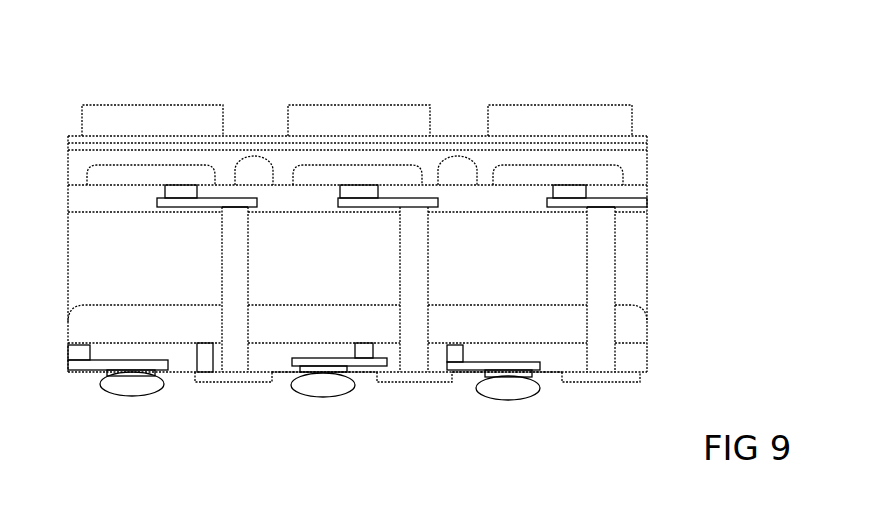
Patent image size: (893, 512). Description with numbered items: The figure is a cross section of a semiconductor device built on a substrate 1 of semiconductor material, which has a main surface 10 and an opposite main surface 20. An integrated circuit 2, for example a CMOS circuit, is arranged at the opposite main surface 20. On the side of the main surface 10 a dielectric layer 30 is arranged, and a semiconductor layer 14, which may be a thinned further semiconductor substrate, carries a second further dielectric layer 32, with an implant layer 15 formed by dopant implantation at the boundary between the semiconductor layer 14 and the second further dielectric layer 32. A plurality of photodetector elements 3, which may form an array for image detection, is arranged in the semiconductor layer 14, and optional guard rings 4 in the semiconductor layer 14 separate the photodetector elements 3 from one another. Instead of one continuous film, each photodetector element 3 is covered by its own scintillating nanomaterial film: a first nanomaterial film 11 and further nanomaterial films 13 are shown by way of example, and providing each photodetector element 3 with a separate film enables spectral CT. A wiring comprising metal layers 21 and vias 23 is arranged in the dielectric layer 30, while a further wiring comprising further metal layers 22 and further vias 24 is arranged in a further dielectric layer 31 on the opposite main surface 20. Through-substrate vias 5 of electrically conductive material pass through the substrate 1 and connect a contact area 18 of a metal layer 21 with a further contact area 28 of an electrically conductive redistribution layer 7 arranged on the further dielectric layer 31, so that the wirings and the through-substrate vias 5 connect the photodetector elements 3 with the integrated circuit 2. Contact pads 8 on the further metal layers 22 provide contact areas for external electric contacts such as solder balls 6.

The substrate 1 is at (638, 282).
The integrated circuit 2 is at (632, 327).
The photodetector element 3 is at (138, 177).
The guard ring 4 is at (262, 177).
The through-substrate via 5 is at (237, 290).
The solder ball 6 is at (128, 383).
The redistribution layer 7 is at (392, 383).
The contact pad 8 is at (142, 368).
The main surface 10 is at (635, 212).
The first nanomaterial film 11 is at (132, 118).
The further nanomaterial film 13 is at (352, 118).
The semiconductor layer 14 is at (642, 167).
The implant layer 15 is at (648, 148).
The contact area 18 is at (237, 210).
The opposite main surface 20 is at (325, 345).
The metal layer 21 is at (210, 212).
The further metal layer 22 is at (140, 365).
The via 23 is at (180, 190).
The further via 24 is at (82, 352).
The further contact area 28 is at (232, 375).
The dielectric layer 30 is at (645, 192).
The further dielectric layer 31 is at (632, 358).
The second further dielectric layer 32 is at (648, 141).